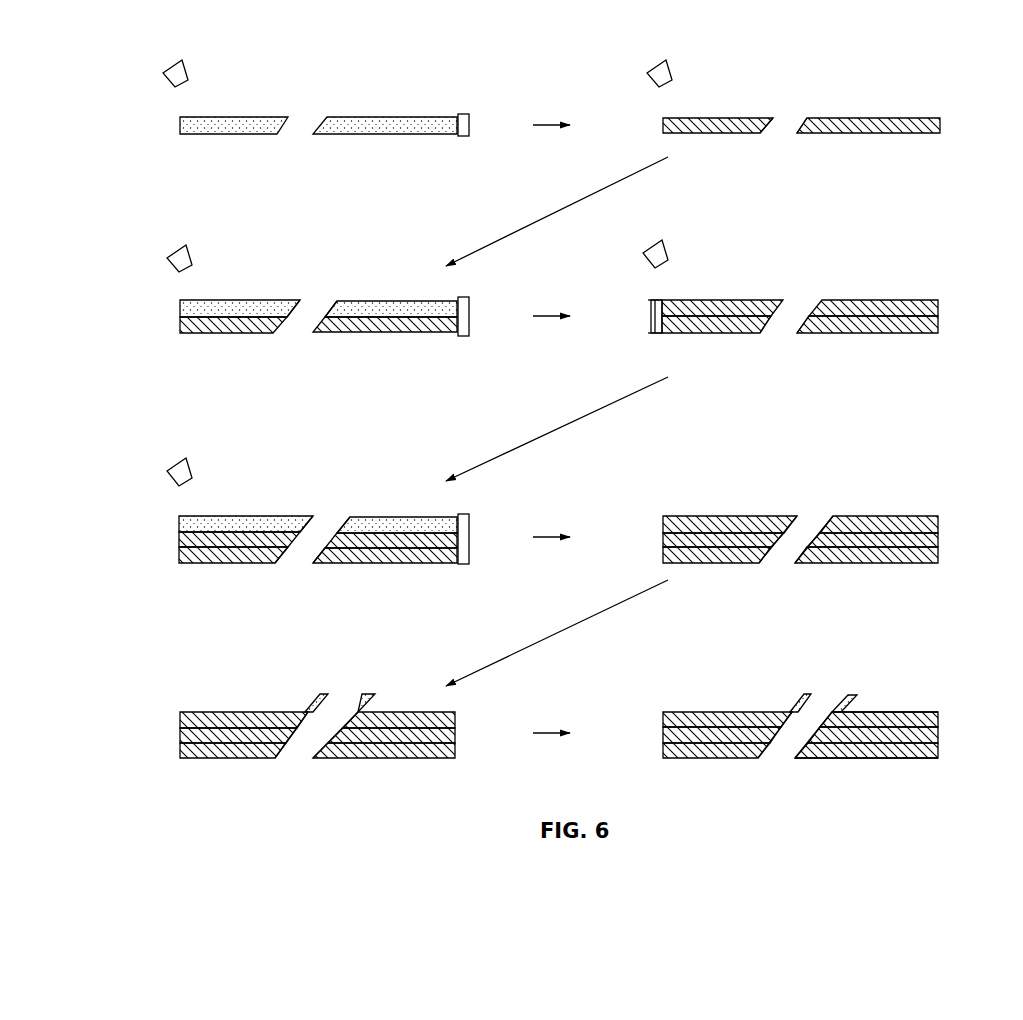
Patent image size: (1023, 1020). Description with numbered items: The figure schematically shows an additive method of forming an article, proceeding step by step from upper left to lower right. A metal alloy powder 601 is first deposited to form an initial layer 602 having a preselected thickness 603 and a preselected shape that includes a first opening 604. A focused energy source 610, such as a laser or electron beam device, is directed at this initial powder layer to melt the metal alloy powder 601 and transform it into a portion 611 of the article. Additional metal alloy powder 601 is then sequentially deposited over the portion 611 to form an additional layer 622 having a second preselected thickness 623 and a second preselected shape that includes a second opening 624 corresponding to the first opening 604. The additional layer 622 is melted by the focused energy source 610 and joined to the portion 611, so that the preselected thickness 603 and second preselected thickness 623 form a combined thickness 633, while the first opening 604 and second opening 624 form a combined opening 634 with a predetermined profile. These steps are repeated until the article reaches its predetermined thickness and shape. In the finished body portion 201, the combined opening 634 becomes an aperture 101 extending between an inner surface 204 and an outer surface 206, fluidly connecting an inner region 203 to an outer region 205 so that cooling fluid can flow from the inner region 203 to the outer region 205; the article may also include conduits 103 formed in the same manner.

The focused energy source 610 is at (186, 63).
The initial layer 602 is at (180, 124).
The metal alloy powder 601 is at (229, 135).
The first opening 604 is at (313, 113).
The preselected thickness 603 is at (470, 122).
The portion 611 is at (663, 122).
The additional layer 622 is at (180, 305).
The second preselected thickness 623 is at (469, 307).
The second opening 624 is at (321, 299).
The combined thickness 633 is at (650, 312).
The combined opening 634 is at (804, 299).
The body portion 201 is at (660, 540).
The aperture 101 is at (819, 514).
The conduit 103 is at (858, 688).
The outer surface 206 is at (907, 712).
The inner surface 204 is at (868, 760).
The outer region 205 is at (815, 679).
The inner region 203 is at (815, 836).